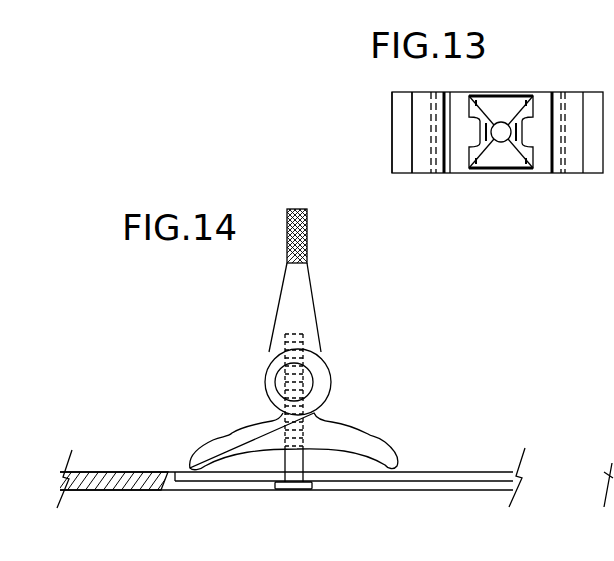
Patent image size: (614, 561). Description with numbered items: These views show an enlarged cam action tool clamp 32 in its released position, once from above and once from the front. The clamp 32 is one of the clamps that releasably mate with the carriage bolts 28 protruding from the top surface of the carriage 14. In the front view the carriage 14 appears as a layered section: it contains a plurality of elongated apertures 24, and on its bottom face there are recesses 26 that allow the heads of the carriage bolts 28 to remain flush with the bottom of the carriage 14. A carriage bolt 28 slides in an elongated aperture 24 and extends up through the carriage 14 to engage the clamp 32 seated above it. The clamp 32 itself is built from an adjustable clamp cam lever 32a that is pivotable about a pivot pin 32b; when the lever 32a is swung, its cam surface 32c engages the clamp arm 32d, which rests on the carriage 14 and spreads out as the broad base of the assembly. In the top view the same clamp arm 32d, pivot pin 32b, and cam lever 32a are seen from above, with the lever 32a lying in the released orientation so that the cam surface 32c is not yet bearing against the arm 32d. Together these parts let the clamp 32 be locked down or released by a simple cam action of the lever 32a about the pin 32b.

In FIG. 14, the carriage 14 is at (118, 472).
In FIG. 14, the elongated aperture 24 is at (417, 478).
In FIG. 14, the recess 26 is at (224, 492).
In FIG. 14, the carriage bolt 28 is at (294, 489).
In FIG. 14, the clamp 32 is at (351, 306).
In FIG. 13, the clamp cam lever 32a is at (523, 95).
In FIG. 14, the clamp cam lever 32a is at (286, 318).
In FIG. 13, the pivot pin 32b is at (497, 172).
In FIG. 14, the pivot pin 32b is at (308, 378).
In FIG. 14, the cam surface 32c is at (328, 396).
In FIG. 13, the clamp arm 32d is at (422, 130).
In FIG. 14, the clamp arm 32d is at (248, 428).